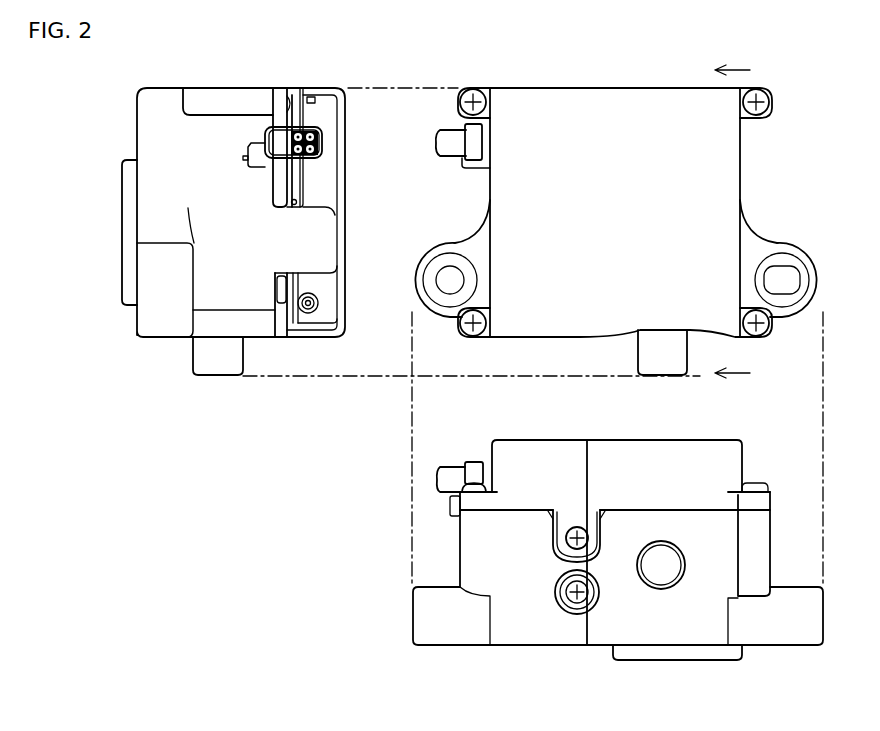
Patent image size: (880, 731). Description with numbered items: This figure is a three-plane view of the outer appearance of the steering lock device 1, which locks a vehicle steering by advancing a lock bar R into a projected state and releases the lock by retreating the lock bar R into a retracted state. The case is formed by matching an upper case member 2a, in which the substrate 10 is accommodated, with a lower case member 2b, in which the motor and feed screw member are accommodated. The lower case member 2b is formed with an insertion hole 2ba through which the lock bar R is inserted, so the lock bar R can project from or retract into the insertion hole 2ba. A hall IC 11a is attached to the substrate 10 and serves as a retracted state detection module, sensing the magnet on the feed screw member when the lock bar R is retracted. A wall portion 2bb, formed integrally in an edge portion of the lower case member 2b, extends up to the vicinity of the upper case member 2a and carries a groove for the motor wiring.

The steering lock device 1 is at (446, 372).
The upper case member 2a is at (317, 92).
The lower case member 2b is at (165, 88).
The insertion hole 2ba is at (660, 578).
The wall portion 2bb is at (323, 226).
The substrate 10 is at (300, 167).
The hall IC 11a is at (294, 202).
The lock bar R is at (196, 362).